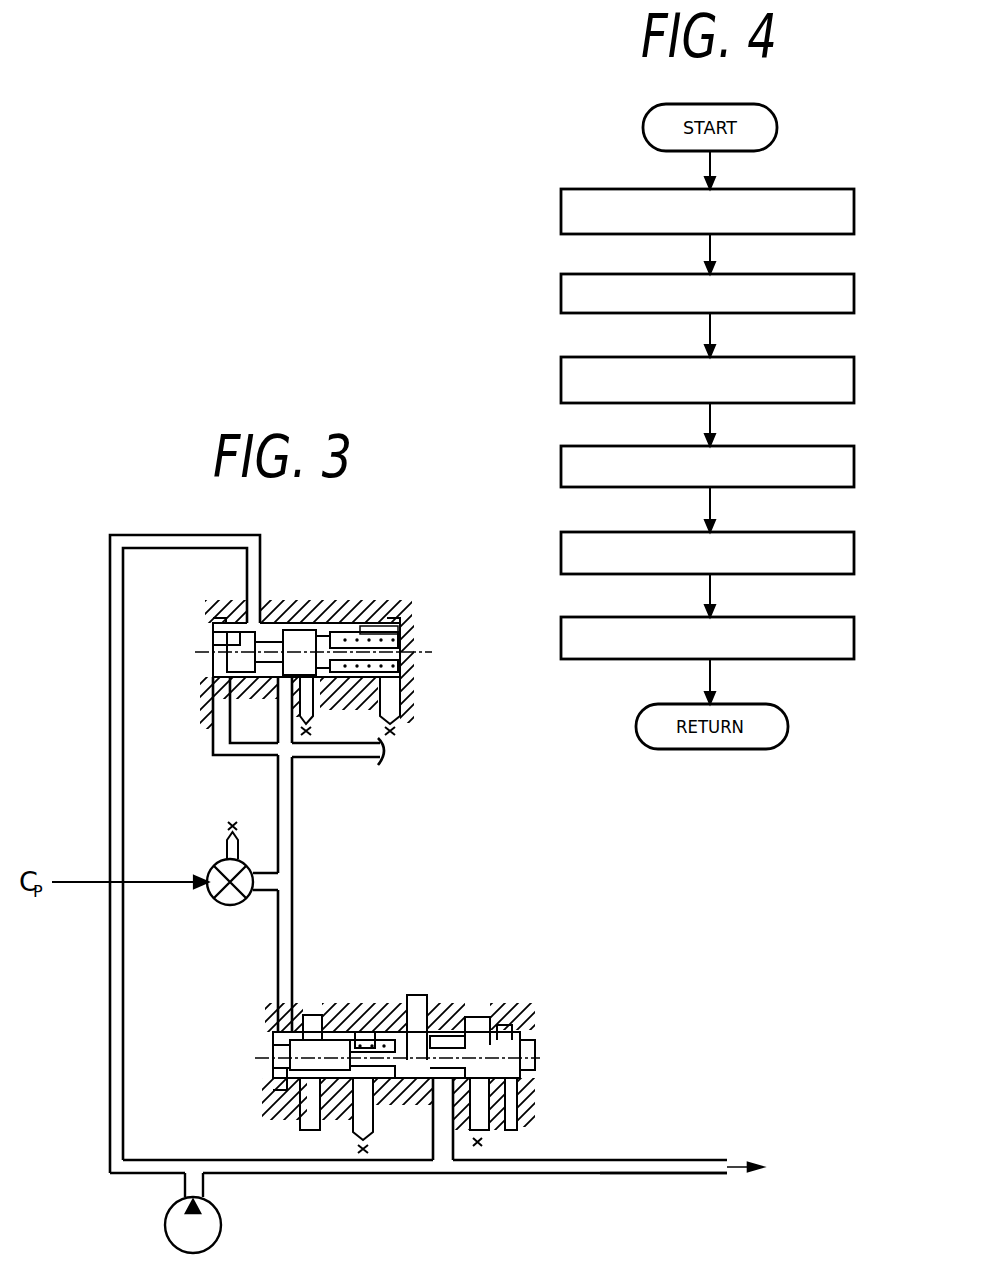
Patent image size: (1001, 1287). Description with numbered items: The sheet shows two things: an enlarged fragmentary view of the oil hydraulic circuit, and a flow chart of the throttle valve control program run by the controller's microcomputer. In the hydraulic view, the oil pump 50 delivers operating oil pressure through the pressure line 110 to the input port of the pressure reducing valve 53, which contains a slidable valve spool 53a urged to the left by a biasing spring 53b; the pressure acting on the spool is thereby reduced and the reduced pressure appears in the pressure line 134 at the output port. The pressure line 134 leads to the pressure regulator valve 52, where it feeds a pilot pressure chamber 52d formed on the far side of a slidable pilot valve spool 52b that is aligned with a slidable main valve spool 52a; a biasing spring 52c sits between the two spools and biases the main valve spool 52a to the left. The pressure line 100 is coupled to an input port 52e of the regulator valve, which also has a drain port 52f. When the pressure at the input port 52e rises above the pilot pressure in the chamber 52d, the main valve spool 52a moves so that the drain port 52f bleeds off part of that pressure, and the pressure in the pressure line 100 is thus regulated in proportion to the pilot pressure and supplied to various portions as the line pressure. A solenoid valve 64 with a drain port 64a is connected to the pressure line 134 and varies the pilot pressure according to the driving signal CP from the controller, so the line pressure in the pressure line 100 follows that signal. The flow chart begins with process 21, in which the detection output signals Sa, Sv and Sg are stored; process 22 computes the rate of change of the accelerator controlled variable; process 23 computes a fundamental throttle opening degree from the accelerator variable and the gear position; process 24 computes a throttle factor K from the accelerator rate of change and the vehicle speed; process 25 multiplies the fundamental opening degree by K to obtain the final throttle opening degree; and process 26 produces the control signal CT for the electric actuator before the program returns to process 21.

In FIG. 4, the process 21 is at (855, 219).
In FIG. 4, the process 22 is at (855, 297).
In FIG. 4, the process 23 is at (855, 381).
In FIG. 4, the process 24 is at (855, 468).
In FIG. 4, the process 25 is at (855, 554).
In FIG. 4, the process 26 is at (855, 640).
In FIG. 3, the oil pump 50 is at (222, 1228).
In FIG. 3, the pressure regulator valve 52 is at (462, 1000).
In FIG. 3, the slidable main valve spool 52a is at (533, 1066).
In FIG. 3, the slidable pilot valve spool 52b is at (287, 1065).
In FIG. 3, the biasing spring 52c is at (357, 1034).
In FIG. 3, the pilot pressure chamber 52d is at (264, 1077).
In FIG. 3, the input port 52e is at (433, 1105).
In FIG. 3, the drain port 52f is at (492, 1105).
In FIG. 3, the pressure reducing valve 53 is at (332, 598).
In FIG. 3, the slidable valve spool 53a is at (212, 640).
In FIG. 3, the biasing spring 53b is at (379, 620).
In FIG. 3, the solenoid valve 64 is at (219, 905).
In FIG. 3, the drain port 64a is at (227, 849).
In FIG. 3, the pressure line 100 is at (700, 1177).
In FIG. 3, the pressure line 110 is at (118, 816).
In FIG. 3, the pressure line 134 is at (293, 798).